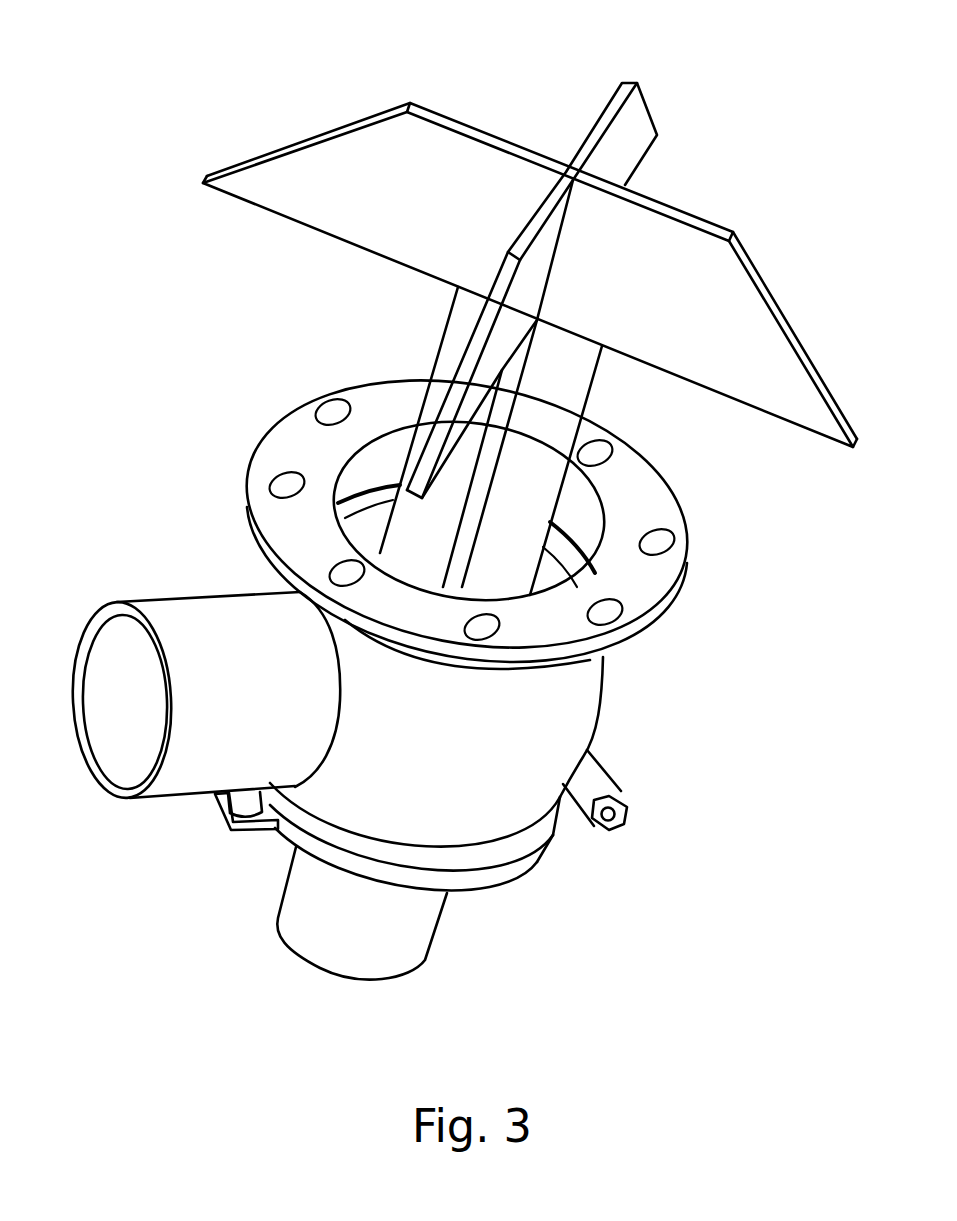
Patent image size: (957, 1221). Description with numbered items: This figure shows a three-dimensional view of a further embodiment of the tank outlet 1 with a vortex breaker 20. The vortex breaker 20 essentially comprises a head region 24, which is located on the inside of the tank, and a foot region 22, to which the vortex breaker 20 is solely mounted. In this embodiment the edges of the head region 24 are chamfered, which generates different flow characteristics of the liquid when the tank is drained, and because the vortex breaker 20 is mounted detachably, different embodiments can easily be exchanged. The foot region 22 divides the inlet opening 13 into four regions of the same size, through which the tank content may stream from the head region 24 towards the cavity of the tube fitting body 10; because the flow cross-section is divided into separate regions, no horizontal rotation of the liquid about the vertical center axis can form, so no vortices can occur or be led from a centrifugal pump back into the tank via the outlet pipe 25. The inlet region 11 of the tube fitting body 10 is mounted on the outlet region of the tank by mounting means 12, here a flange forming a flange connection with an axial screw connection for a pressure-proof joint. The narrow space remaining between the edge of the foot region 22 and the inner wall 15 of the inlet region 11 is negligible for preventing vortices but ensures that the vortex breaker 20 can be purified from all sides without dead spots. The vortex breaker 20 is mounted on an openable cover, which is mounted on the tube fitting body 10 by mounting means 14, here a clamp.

The tank outlet 1 is at (80, 303).
The tube fitting body 10 is at (565, 713).
The inlet region 11 is at (316, 458).
The mounting means 12 is at (638, 593).
The inlet opening 13 is at (550, 575).
The mounting means 14 is at (512, 865).
The inner wall 15 is at (384, 463).
The vortex breaker 20 is at (590, 157).
The foot region 22 is at (543, 457).
The head region 24 is at (744, 323).
The outlet pipe 25 is at (213, 634).